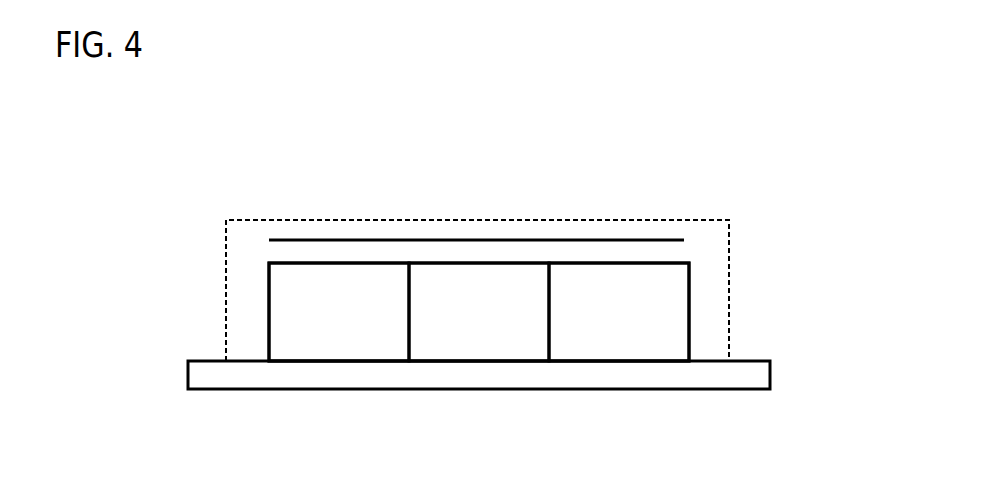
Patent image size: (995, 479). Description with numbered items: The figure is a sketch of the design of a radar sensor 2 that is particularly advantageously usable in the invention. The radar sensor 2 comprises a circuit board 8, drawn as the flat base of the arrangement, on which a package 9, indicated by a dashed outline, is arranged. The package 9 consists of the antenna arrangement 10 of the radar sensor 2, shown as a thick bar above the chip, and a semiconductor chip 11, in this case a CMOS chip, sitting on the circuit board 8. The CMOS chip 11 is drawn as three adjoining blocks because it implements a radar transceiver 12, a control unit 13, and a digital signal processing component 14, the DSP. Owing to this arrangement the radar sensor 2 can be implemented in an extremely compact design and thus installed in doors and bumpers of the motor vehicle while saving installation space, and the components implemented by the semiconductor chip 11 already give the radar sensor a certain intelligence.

The radar sensor 2 is at (717, 166).
The circuit board 8 is at (770, 374).
The package 9 is at (224, 263).
The antenna arrangement 10 is at (462, 240).
The semiconductor chip 11 is at (689, 318).
The radar transceiver 12 is at (343, 349).
The control unit 13 is at (508, 349).
The digital signal processing component 14 is at (643, 349).